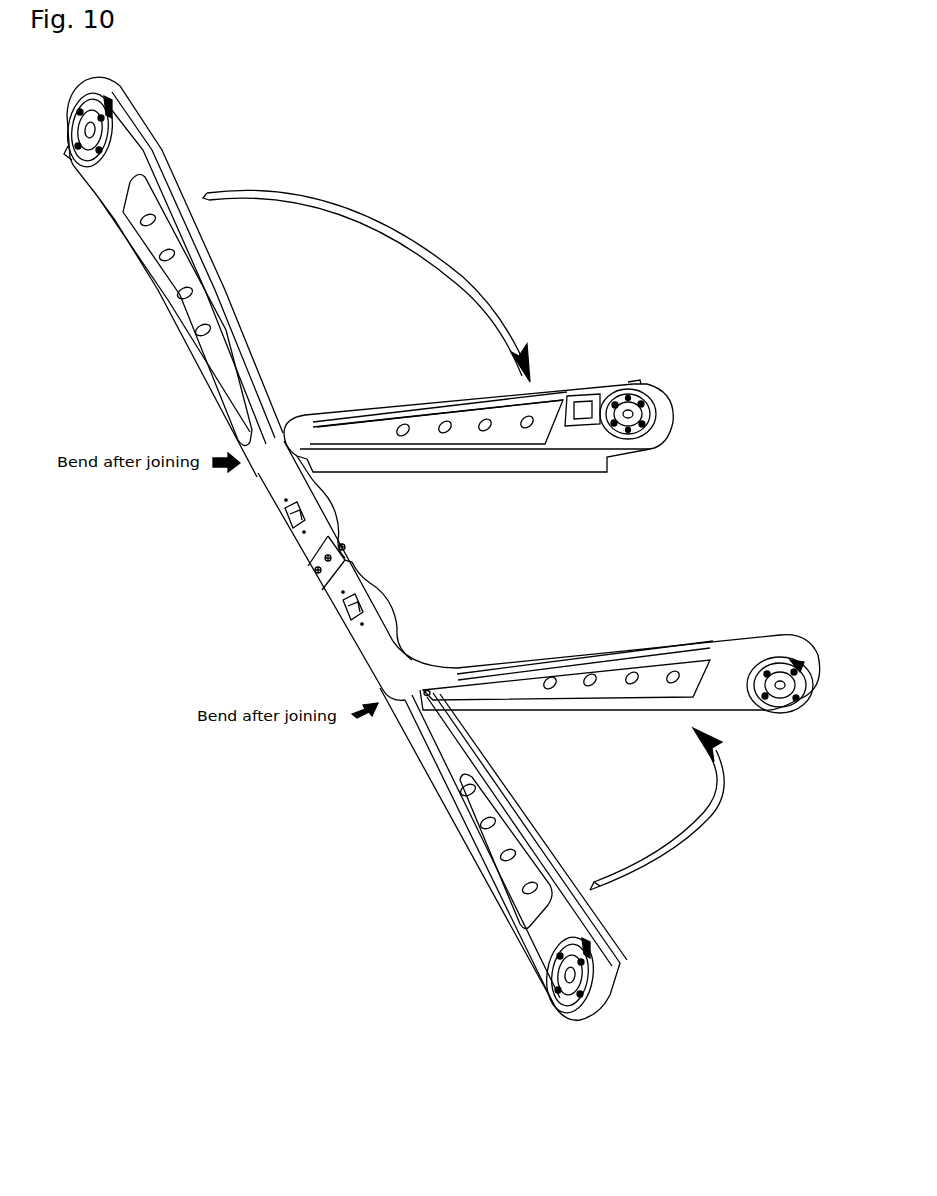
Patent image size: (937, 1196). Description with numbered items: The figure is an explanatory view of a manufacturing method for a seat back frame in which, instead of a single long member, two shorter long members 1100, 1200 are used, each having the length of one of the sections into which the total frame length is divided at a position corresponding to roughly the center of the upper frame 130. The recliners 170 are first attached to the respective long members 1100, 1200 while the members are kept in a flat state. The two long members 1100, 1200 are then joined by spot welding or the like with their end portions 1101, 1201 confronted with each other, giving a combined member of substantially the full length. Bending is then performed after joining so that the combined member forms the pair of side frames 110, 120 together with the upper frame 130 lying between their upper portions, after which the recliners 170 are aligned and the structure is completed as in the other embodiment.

The side frame 110 is at (402, 402).
The side frame 120 is at (623, 702).
The upper frame 130 is at (297, 548).
The recliner 170 is at (80, 158).
The long member 1100 is at (162, 307).
The end portion 1101 is at (340, 532).
The long member 1200 is at (490, 876).
The end portion 1201 is at (352, 562).